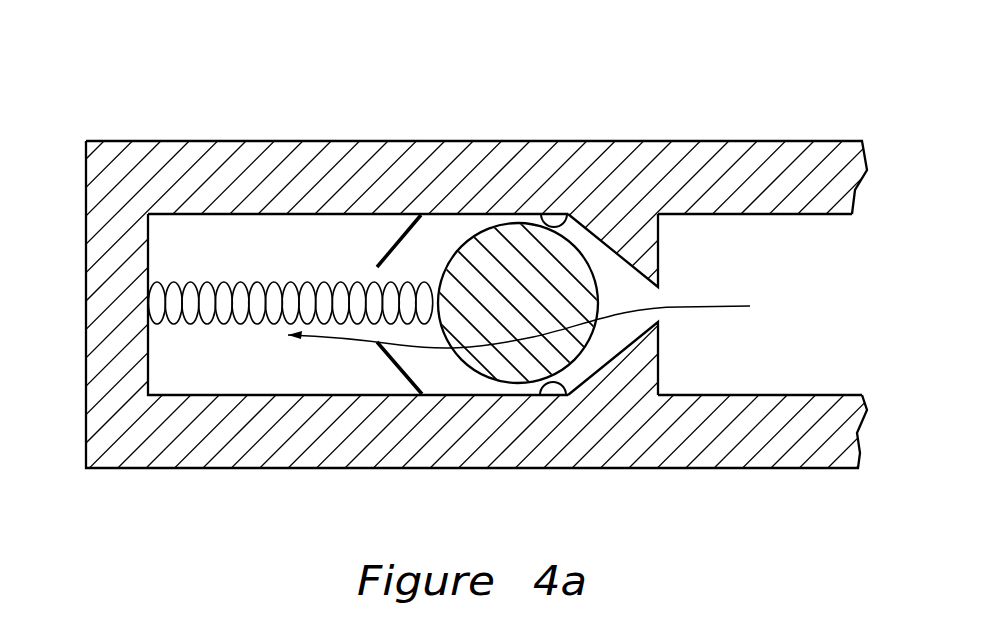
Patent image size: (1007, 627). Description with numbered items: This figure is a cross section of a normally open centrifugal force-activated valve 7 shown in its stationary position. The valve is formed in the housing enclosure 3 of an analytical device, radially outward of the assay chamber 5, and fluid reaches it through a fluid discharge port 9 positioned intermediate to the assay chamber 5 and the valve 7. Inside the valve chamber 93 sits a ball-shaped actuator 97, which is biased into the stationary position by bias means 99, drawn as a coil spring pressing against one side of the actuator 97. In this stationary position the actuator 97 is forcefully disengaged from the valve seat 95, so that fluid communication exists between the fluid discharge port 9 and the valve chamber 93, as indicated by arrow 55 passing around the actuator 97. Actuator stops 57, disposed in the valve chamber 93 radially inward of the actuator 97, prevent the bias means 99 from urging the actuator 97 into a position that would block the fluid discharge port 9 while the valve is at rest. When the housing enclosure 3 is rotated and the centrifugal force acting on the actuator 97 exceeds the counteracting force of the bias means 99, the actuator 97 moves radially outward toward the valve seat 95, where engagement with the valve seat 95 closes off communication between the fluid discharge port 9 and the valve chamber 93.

The housing enclosure 3 is at (507, 140).
The assay chamber 5 is at (782, 242).
The normally open centrifugal force-activated valve 7 is at (262, 214).
The fluid discharge port 9 is at (655, 295).
The arrow 55 is at (538, 320).
The actuator stops 57 is at (552, 214).
The valve chamber 93 is at (206, 370).
The valve seat 95 is at (392, 245).
The actuator 97 is at (497, 260).
The bias means 99 is at (223, 322).